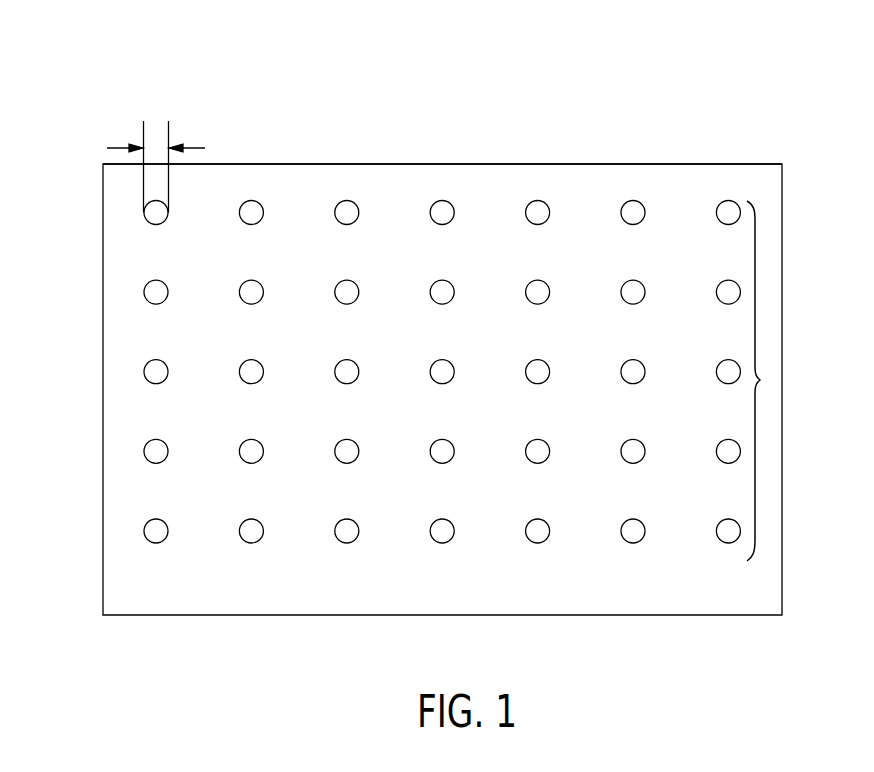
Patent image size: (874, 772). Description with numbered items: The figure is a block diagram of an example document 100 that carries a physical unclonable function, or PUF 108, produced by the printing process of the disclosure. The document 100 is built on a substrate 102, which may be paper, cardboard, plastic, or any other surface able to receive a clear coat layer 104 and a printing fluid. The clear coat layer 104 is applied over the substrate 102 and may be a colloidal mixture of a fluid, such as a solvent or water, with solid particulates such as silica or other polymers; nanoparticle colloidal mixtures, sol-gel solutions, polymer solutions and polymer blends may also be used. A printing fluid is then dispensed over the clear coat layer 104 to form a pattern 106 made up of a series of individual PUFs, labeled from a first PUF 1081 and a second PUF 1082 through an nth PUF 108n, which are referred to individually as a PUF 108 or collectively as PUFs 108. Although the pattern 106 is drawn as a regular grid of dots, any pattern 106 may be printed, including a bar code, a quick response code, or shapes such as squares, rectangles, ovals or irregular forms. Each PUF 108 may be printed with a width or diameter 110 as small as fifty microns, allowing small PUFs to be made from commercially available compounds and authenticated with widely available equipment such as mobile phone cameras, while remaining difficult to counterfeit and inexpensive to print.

The document 100 is at (683, 108).
The substrate 102 is at (783, 210).
The clear coat layer 104 is at (509, 185).
The pattern 106 is at (760, 380).
The physical unclonable function (PUF) 108 is at (442, 372).
The first PUF 1081 is at (146, 221).
The second PUF 1082 is at (254, 200).
The nth PUF 108n is at (720, 543).
The width or diameter 110 is at (195, 144).